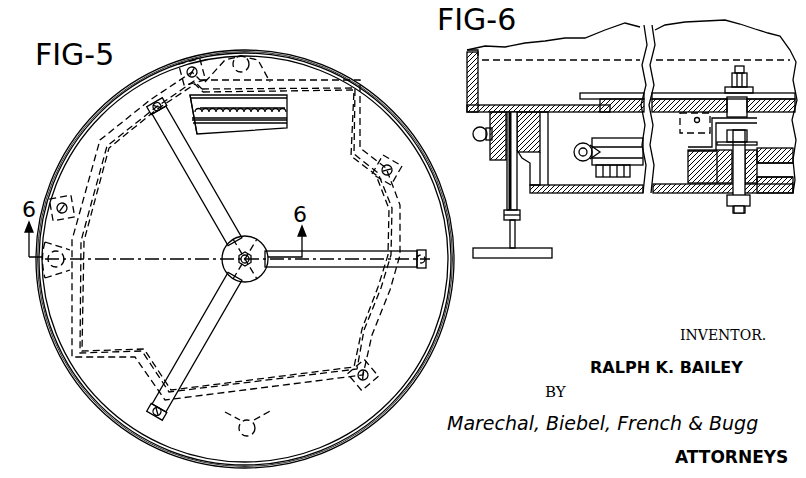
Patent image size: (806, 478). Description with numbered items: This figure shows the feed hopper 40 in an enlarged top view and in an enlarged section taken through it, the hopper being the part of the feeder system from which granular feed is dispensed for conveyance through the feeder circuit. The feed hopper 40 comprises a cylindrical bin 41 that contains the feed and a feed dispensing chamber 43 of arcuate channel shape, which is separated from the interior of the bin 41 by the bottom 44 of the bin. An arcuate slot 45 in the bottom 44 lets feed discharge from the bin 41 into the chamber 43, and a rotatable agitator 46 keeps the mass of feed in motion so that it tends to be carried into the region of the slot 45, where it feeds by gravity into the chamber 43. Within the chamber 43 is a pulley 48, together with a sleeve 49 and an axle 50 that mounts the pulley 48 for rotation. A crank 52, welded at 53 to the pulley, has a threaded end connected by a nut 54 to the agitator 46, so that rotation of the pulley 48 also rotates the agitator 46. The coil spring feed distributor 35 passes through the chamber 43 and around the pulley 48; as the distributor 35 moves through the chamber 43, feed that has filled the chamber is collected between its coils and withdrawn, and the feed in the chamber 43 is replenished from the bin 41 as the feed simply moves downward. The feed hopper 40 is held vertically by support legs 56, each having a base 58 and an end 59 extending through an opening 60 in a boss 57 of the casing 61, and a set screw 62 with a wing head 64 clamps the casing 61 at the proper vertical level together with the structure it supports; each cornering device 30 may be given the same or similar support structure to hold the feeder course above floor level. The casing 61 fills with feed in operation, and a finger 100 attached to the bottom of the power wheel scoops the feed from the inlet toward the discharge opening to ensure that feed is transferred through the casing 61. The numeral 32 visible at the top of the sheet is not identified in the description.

In FIG. 5, the cornering device 30 is at (107, 147).
In FIG. 5, the indicator 32 is at (169, 6).
In FIG. 5, the coil spring feed distributor 35 is at (278, 110).
In FIG. 6, the coil spring feed distributor 35 is at (583, 165).
In FIG. 5, the feed hopper 40 is at (98, 100).
In FIG. 6, the feed hopper 40 is at (462, 80).
In FIG. 5, the cylindrical bin 41 is at (325, 65).
In FIG. 6, the cylindrical bin 41 is at (467, 52).
In FIG. 5, the feed dispensing chamber 43 is at (195, 100).
In FIG. 6, the feed dispensing chamber 43 is at (557, 178).
In FIG. 5, the bottom 44 is at (296, 180).
In FIG. 6, the bottom 44 is at (546, 108).
In FIG. 5, the arcuate slot 45 is at (218, 128).
In FIG. 5, the rotatable agitator 46 is at (222, 287).
In FIG. 6, the rotatable agitator 46 is at (716, 97).
In FIG. 5, the pulley 48 is at (275, 123).
In FIG. 6, the pulley 48 is at (627, 180).
In FIG. 6, the sleeve 49 is at (728, 172).
In FIG. 6, the axle 50 is at (750, 150).
In FIG. 6, the crank 52 is at (707, 140).
In FIG. 6, the weld 53 is at (704, 168).
In FIG. 6, the nut 54 is at (747, 80).
In FIG. 5, the support leg 56 is at (240, 53).
In FIG. 6, the support leg 56 is at (506, 216).
In FIG. 5, the boss 57 is at (224, 58).
In FIG. 6, the boss 57 is at (505, 160).
In FIG. 6, the base 58 is at (516, 257).
In FIG. 6, the end 59 is at (509, 122).
In FIG. 6, the opening 60 is at (532, 116).
In FIG. 6, the casing 61 is at (718, 192).
In FIG. 6, the set screw 62 is at (492, 150).
In FIG. 6, the wing head 64 is at (471, 134).
In FIG. 6, the finger 100 is at (607, 180).